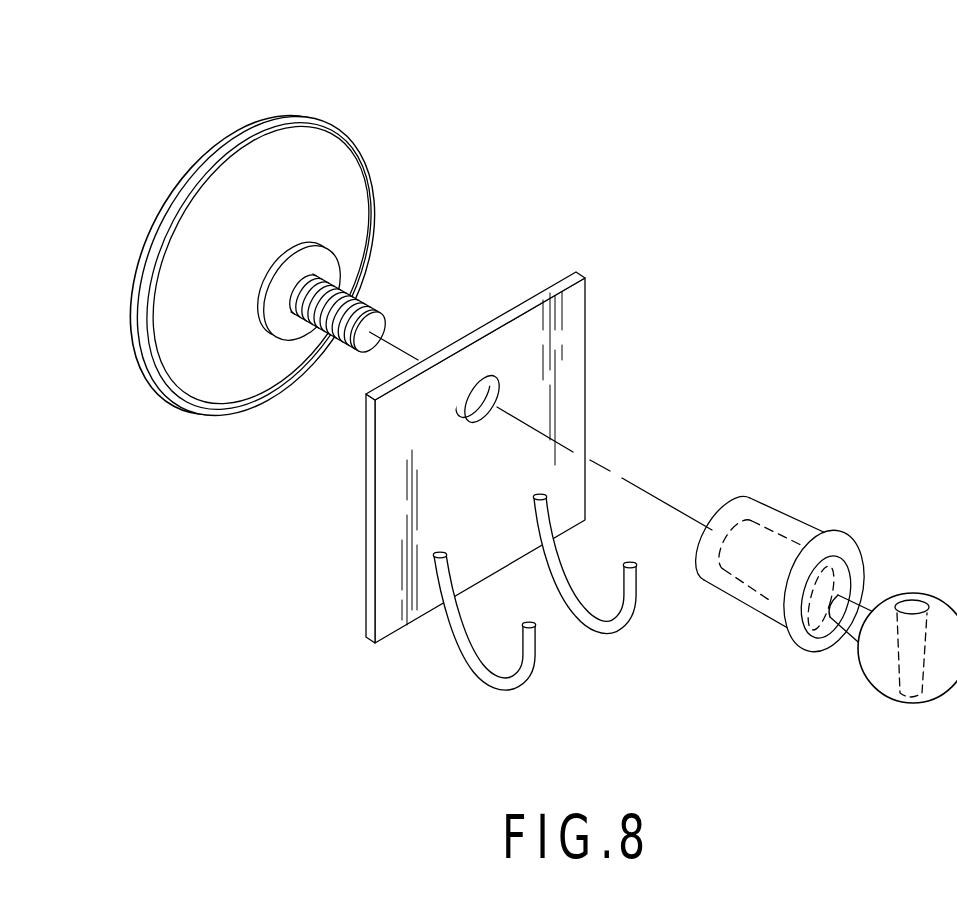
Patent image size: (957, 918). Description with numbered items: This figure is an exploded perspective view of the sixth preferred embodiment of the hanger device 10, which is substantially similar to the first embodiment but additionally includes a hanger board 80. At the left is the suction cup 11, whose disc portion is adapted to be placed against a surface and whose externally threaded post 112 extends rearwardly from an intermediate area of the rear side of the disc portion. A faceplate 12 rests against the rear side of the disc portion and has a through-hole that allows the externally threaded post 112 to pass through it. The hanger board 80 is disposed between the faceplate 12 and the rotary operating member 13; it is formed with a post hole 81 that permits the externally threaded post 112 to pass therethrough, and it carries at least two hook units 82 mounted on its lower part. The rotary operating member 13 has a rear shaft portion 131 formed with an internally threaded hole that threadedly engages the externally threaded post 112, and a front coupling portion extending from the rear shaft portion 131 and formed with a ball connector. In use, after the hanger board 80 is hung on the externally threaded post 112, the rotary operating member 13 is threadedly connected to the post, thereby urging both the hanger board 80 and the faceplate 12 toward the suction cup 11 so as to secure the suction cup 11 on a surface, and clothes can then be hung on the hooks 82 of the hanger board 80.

The hanger device 10 is at (612, 160).
The suction cup 11 is at (352, 136).
The faceplate 12 is at (280, 158).
The externally threaded post 112 is at (353, 292).
The rotary operating member 13 is at (765, 514).
The rear shaft portion 131 is at (826, 596).
The hanger board 80 is at (350, 615).
The post hole 81 is at (483, 392).
The hook units 82 is at (475, 666).